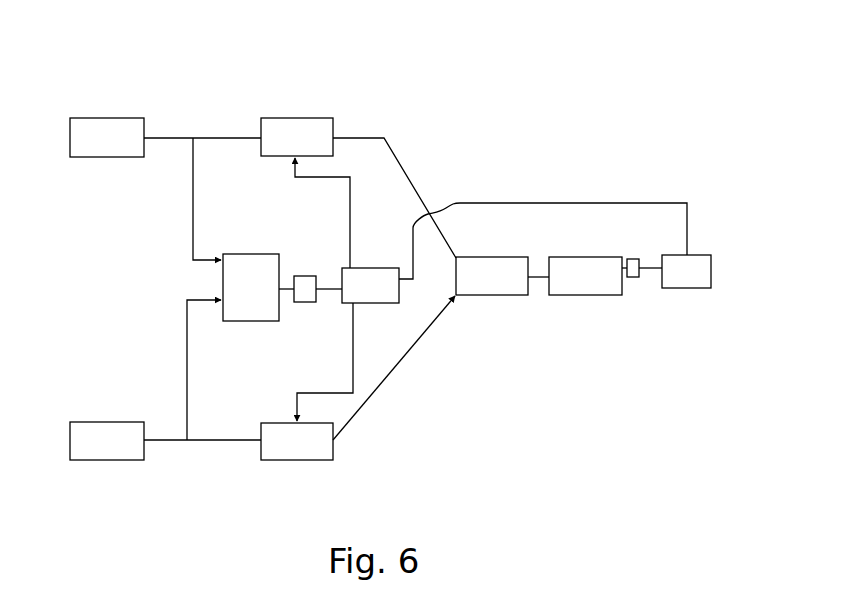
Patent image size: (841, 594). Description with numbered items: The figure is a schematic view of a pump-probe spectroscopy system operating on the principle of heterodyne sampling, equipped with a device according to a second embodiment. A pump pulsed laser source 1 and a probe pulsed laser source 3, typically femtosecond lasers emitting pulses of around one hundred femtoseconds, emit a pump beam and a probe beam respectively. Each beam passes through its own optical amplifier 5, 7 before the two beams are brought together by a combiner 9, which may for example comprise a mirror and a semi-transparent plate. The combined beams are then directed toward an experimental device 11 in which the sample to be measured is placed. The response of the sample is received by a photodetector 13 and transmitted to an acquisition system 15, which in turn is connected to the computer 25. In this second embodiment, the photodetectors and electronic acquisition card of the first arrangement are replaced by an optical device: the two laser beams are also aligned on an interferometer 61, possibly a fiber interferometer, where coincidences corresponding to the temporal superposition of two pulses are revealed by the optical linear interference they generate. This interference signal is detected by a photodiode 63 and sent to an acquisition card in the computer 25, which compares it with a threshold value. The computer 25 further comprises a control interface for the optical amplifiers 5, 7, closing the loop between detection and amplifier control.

The pump pulsed laser source 1 is at (67, 116).
The probe pulsed laser source 3 is at (67, 420).
The optical amplifier 5 is at (338, 115).
The optical amplifier 7 is at (338, 464).
The combiner 9 is at (501, 255).
The experimental device 11 is at (592, 255).
The photodetector 13 is at (640, 257).
The acquisition system 15 is at (690, 291).
The computer 25 is at (368, 266).
The interferometer 61 is at (249, 252).
The photodiode 63 is at (307, 274).